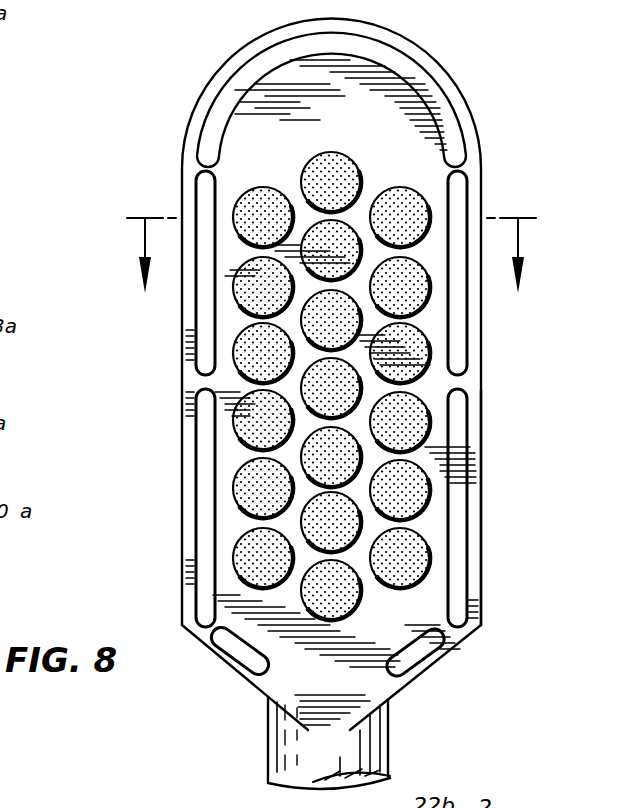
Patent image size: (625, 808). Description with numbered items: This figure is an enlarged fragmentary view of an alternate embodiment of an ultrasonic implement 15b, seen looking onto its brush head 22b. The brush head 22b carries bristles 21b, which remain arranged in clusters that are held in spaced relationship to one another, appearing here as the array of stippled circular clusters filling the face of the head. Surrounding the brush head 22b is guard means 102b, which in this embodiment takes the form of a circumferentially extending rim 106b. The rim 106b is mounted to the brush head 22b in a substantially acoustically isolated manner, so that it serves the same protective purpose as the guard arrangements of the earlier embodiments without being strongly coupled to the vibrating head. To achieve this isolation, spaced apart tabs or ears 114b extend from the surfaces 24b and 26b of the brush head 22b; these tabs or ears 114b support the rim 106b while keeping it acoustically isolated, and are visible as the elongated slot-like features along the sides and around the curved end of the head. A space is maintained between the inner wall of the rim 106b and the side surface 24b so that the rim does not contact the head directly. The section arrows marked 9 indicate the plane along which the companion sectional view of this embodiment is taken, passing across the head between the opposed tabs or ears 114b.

The guard means 102b is at (172, 160).
The circumferentially extending rim 106b is at (477, 444).
The surface 26b is at (392, 70).
The spaced apart tabs or ears 114b is at (197, 168).
The bristles 21b is at (340, 175).
The side surface 24b is at (207, 473).
The brush head 22b is at (357, 675).
The ultrasonic implement 15b is at (262, 757).
The section line 9 is at (331, 277).